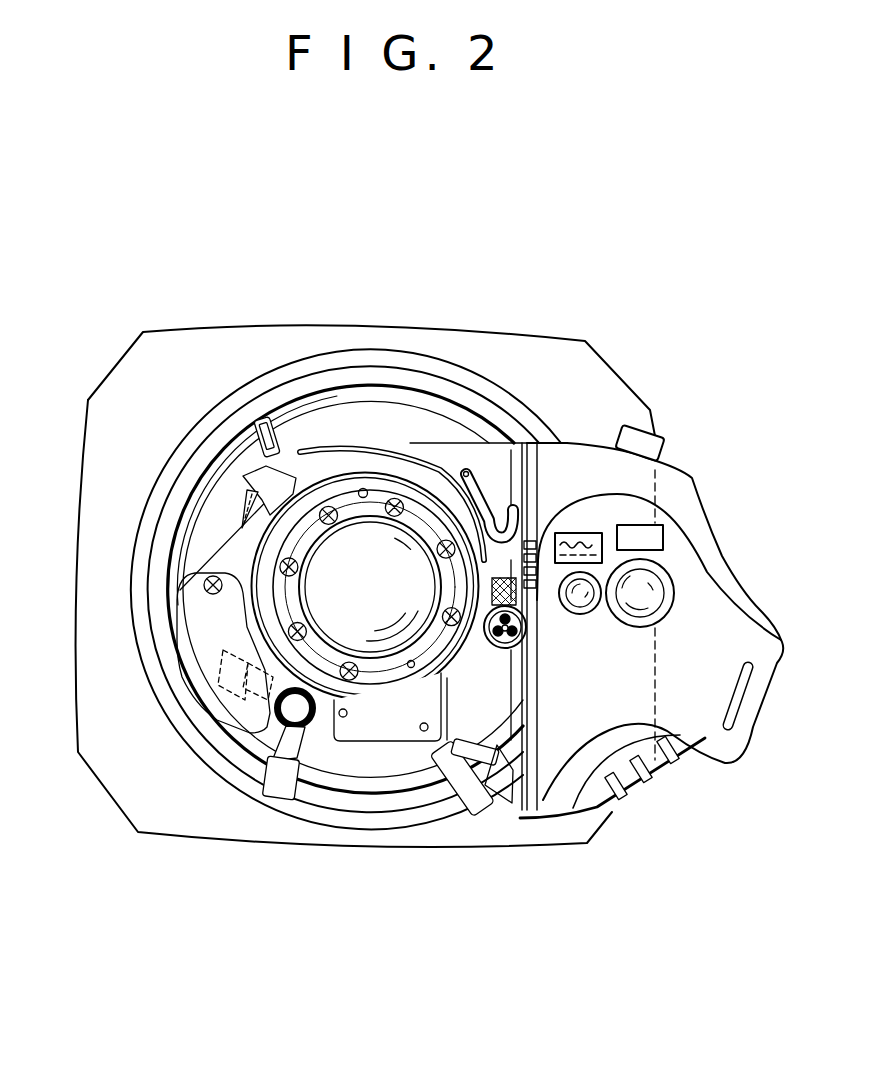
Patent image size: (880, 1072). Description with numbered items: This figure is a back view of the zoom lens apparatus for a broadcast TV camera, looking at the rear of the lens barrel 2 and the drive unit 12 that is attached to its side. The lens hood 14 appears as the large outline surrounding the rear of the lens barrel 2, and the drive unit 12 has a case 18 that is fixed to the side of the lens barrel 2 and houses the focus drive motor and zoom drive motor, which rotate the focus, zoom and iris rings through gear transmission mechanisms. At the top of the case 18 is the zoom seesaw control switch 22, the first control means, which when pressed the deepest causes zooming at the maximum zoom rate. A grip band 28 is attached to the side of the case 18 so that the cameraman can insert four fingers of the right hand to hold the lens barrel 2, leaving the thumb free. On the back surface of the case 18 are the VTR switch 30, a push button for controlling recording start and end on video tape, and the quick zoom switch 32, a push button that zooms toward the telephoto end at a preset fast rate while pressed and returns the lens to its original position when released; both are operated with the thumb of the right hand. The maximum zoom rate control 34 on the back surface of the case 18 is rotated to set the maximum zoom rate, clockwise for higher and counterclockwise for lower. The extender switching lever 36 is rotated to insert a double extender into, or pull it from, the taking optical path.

The lens barrel 2 is at (383, 434).
The drive unit 12 is at (600, 793).
The lens hood 14 is at (113, 400).
The case 18 is at (698, 497).
The zoom seesaw control switch 22 is at (652, 450).
The grip band 28 is at (742, 692).
The VTR switch 30 is at (670, 586).
The quick zoom switch 32 is at (582, 604).
The maximum zoom rate control 34 is at (497, 652).
The extender switching lever 36 is at (280, 788).